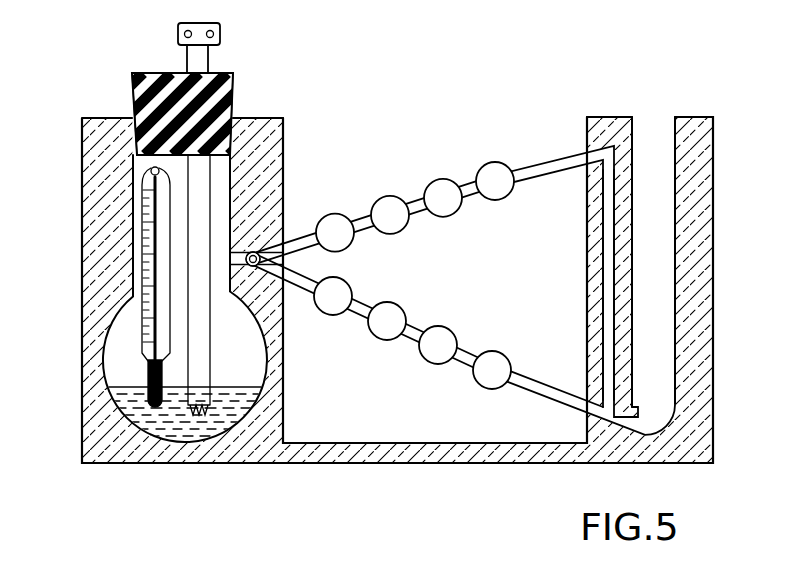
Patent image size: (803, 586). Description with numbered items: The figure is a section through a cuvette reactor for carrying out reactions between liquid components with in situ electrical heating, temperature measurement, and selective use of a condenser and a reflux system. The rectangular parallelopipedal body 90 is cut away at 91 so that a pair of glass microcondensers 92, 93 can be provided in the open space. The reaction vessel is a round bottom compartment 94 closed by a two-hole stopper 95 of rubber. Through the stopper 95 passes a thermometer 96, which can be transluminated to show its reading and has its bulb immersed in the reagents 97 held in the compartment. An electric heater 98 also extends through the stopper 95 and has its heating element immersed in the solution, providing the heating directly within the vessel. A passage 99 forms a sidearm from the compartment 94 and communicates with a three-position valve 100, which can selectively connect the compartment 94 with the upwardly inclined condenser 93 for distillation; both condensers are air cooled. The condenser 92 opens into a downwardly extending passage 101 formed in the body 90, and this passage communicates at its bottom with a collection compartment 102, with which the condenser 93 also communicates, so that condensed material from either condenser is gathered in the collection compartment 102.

The rectangular parallelopipedal body 90 is at (83, 217).
The cut-away 91 is at (322, 416).
The glass microcondenser 92 is at (548, 165).
The glass microcondenser 93 is at (543, 394).
The round bottom compartment 94 is at (103, 363).
The two-hole stopper 95 is at (233, 97).
The thermometer 96 is at (142, 253).
The reagents 97 is at (180, 428).
The electric heater 98 is at (212, 345).
The passage 99 is at (250, 251).
The three-position valve 100 is at (258, 266).
The downwardly extending passage 101 is at (607, 273).
The collection compartment 102 is at (680, 280).